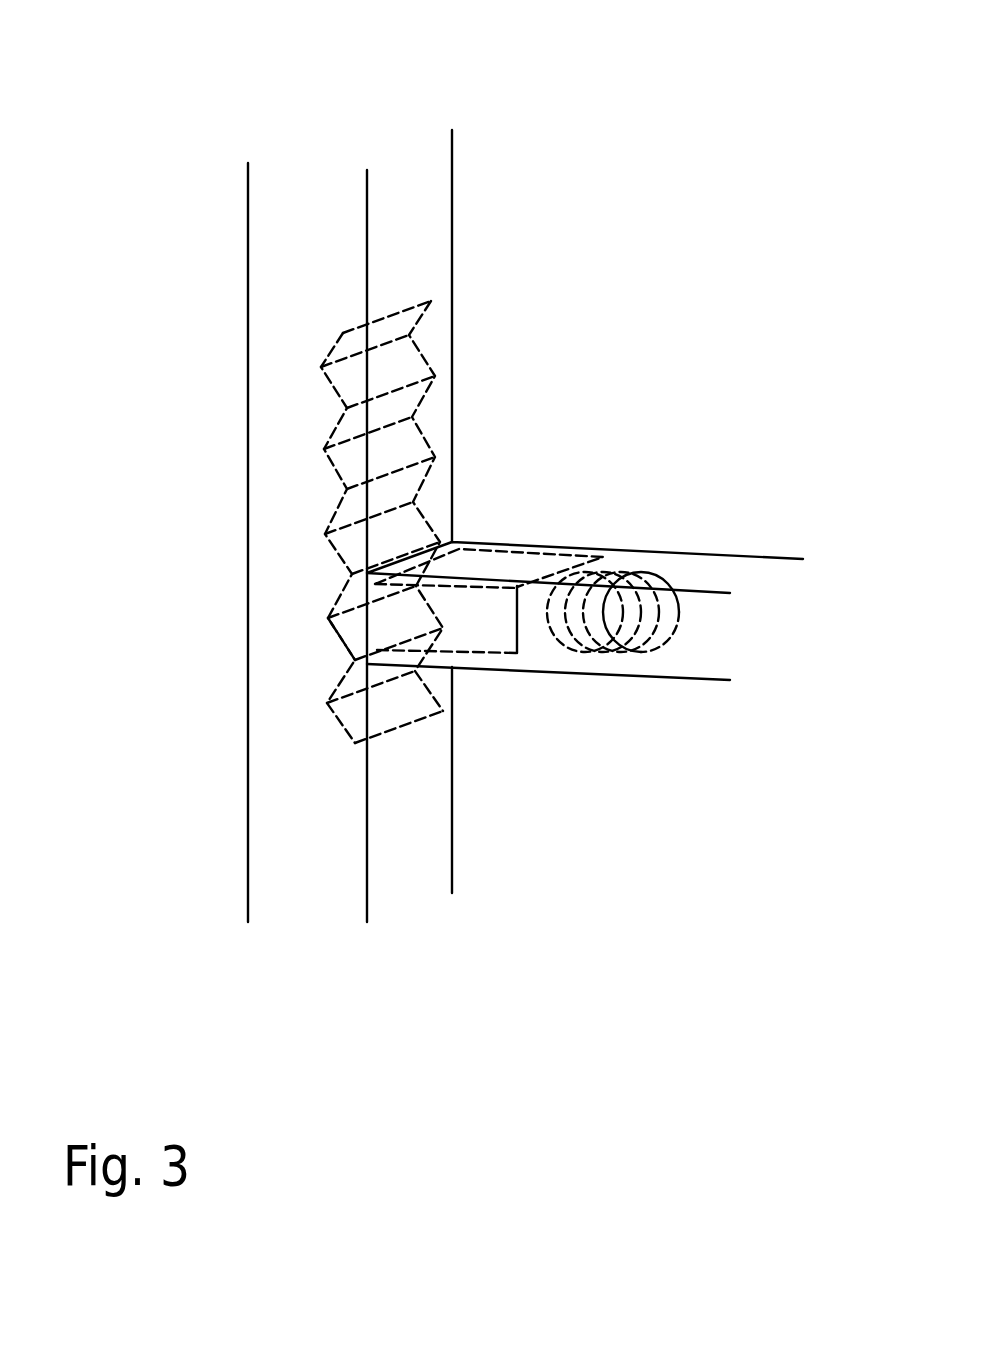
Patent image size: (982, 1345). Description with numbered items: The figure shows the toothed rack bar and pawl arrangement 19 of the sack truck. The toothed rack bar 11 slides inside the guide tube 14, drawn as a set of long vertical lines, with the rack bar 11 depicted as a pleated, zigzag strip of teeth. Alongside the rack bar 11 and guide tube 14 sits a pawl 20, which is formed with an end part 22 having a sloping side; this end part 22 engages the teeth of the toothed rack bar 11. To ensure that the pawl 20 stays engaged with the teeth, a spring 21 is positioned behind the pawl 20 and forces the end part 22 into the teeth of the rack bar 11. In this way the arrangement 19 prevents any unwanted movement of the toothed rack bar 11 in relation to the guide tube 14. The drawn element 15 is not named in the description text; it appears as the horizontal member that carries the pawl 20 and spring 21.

The toothed rack bar 11 is at (418, 452).
The guide tube 14 is at (455, 858).
The carrier arm 15 is at (733, 555).
The toothed rack bar and pawl arrangement 19 is at (773, 119).
The pawl 20 is at (510, 568).
The spring 21 is at (607, 614).
The end part 22 is at (356, 614).